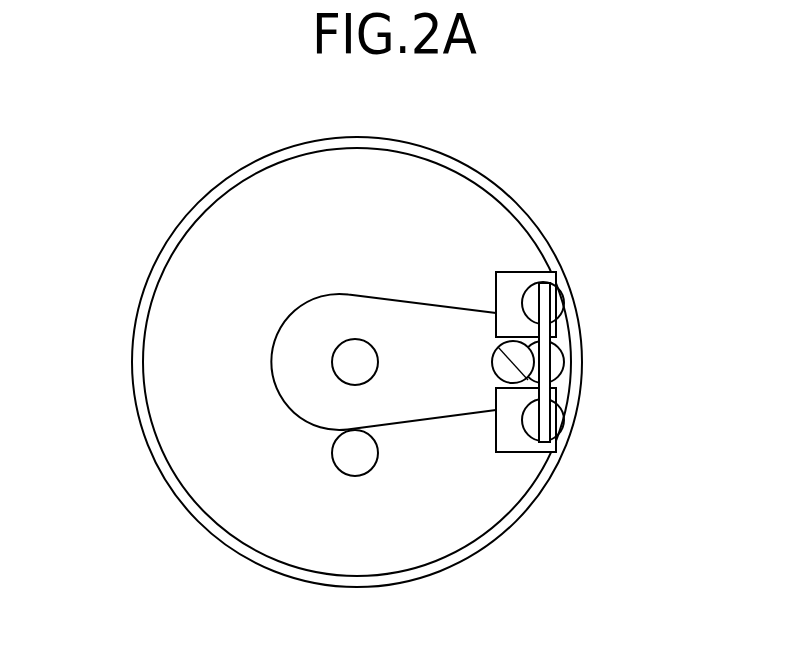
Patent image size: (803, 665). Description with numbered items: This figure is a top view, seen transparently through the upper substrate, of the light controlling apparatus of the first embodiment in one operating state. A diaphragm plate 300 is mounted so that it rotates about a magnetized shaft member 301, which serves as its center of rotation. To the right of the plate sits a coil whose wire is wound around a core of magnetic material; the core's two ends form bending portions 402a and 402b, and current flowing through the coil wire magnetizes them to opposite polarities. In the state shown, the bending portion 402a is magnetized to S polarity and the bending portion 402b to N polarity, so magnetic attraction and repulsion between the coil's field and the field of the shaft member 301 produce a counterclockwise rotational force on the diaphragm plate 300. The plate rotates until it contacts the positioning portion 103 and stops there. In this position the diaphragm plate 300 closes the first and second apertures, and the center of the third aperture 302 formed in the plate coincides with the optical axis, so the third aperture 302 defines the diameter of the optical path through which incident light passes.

The diaphragm plate 300 is at (313, 308).
The shaft member 301 is at (497, 350).
The third aperture 302 is at (332, 362).
The positioning portion 103 is at (353, 476).
The bending portion 402a is at (516, 272).
The bending portion 402b is at (513, 453).